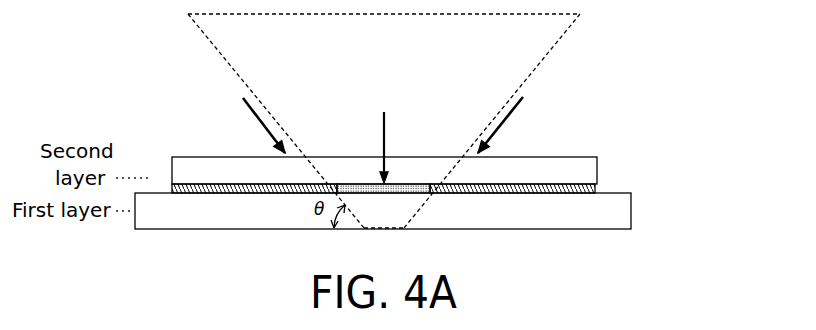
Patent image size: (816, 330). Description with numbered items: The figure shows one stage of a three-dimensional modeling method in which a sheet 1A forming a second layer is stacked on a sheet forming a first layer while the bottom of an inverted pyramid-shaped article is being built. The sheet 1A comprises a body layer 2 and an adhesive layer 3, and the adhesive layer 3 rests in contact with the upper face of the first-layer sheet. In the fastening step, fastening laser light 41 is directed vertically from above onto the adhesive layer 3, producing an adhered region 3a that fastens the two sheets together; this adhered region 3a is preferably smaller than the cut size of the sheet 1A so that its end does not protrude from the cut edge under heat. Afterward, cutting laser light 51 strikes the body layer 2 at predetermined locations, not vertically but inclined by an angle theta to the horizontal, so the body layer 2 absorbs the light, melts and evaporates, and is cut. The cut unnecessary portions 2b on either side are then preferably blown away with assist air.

The sheet 1A is at (432, 167).
The body layer 2 is at (597, 166).
The unnecessary portion 2b is at (295, 152).
The adhesive layer 3 is at (415, 167).
The adhered region 3a is at (430, 181).
The fastening laser light 41 is at (386, 131).
The cutting laser light 51 is at (247, 104).